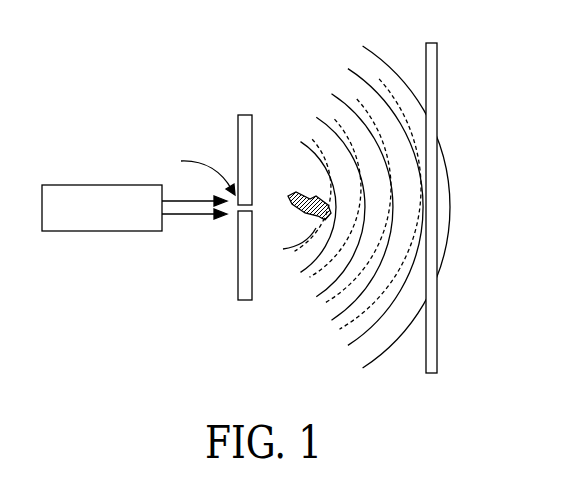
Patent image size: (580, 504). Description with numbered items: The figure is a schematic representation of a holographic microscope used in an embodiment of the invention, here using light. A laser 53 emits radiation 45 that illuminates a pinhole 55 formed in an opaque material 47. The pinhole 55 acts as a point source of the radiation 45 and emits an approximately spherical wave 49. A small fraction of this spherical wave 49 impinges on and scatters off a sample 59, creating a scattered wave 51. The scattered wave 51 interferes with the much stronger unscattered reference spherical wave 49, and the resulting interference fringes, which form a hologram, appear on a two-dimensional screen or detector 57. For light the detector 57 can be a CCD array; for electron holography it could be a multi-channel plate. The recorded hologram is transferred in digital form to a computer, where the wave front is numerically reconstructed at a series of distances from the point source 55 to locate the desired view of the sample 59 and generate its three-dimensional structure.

The radiation 45 is at (175, 216).
The opaque material 47 is at (239, 114).
The spherical wave 49 is at (271, 194).
The scattered wave 51 is at (321, 149).
The laser 53 is at (57, 232).
The pinhole 55 is at (194, 171).
The detector 57 is at (437, 62).
The sample 59 is at (291, 197).